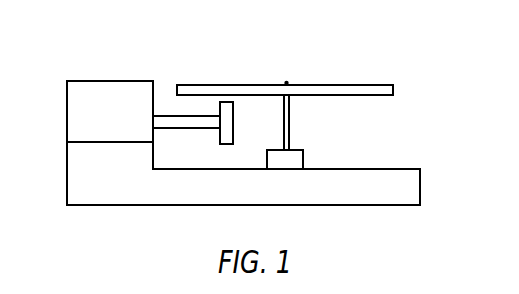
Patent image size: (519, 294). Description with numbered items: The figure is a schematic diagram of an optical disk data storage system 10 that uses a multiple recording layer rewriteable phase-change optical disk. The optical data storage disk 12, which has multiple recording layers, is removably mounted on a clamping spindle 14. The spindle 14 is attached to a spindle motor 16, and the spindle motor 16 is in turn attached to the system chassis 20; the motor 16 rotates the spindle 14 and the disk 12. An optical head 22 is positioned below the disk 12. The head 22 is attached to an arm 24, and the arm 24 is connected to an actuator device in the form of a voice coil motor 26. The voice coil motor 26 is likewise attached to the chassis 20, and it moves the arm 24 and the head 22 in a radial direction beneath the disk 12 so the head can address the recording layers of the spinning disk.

The optical disk data storage system 10 is at (143, 229).
The optical data storage disk 12 is at (357, 87).
The clamping spindle 14 is at (288, 116).
The spindle motor 16 is at (303, 159).
The system chassis 20 is at (398, 188).
The optical head 22 is at (225, 108).
The arm 24 is at (163, 114).
The voice coil motor 26 is at (91, 88).